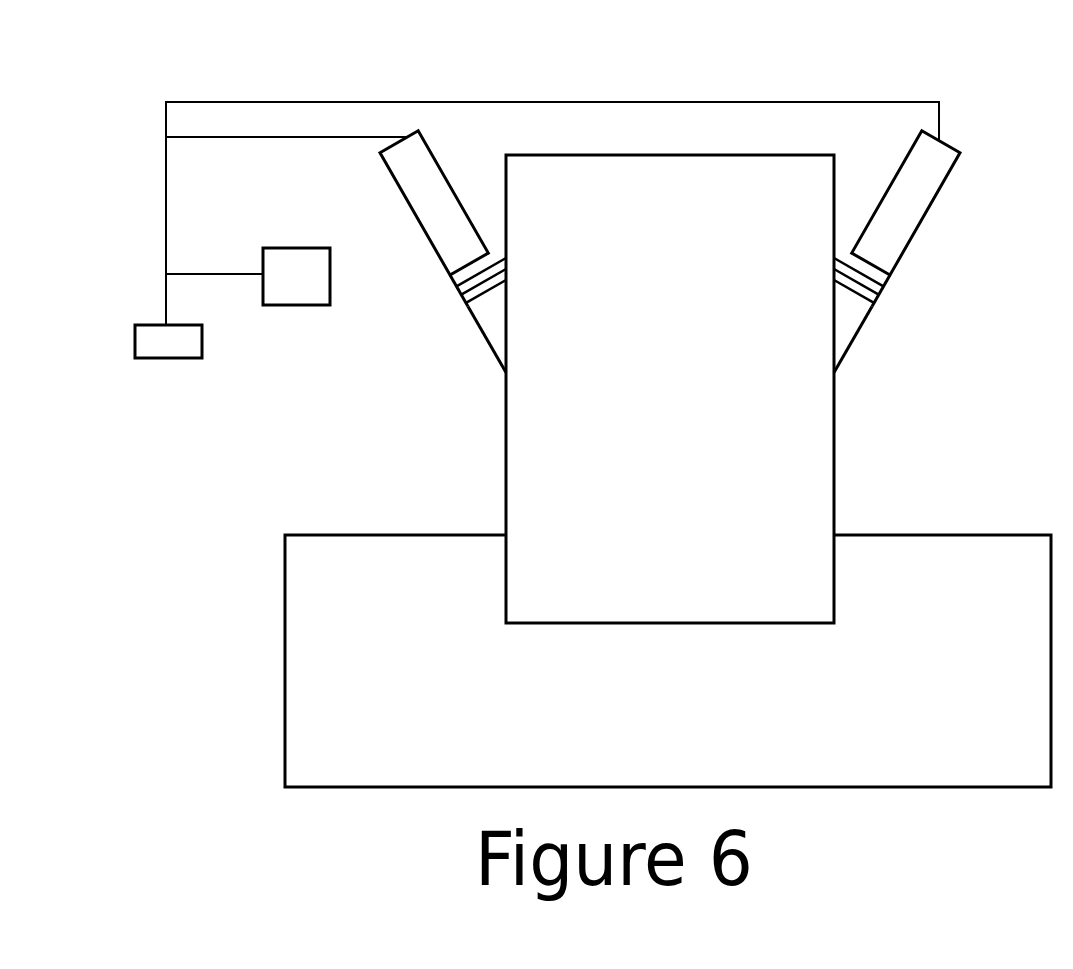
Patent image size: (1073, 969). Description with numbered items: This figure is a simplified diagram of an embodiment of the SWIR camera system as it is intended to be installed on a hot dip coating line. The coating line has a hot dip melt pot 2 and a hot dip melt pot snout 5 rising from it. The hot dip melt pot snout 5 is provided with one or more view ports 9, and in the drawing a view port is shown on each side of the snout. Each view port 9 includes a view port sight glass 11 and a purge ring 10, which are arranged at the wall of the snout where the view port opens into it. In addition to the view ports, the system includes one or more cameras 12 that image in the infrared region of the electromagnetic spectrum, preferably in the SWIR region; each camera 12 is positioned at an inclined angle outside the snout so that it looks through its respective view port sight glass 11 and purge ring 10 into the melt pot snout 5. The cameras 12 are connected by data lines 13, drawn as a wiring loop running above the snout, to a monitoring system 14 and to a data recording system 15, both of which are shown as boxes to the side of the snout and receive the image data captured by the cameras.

The hot dip melt pot 2 is at (668, 661).
The hot dip melt pot snout 5 is at (670, 389).
The view port 9 is at (477, 348).
The purge ring 10 is at (460, 305).
The view port sight glass 11 is at (453, 285).
The camera 12 is at (445, 185).
The data lines 13 is at (291, 100).
The monitoring system 14 is at (248, 276).
The data recording system 15 is at (180, 340).